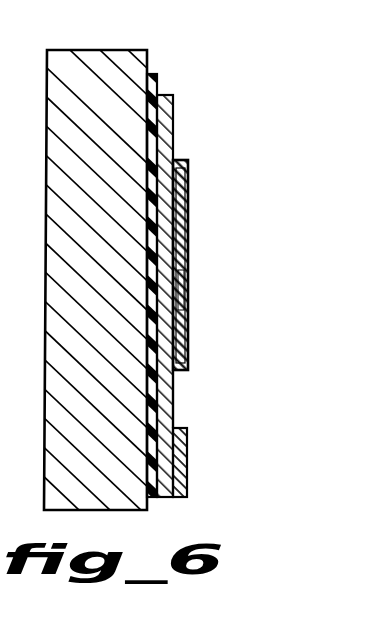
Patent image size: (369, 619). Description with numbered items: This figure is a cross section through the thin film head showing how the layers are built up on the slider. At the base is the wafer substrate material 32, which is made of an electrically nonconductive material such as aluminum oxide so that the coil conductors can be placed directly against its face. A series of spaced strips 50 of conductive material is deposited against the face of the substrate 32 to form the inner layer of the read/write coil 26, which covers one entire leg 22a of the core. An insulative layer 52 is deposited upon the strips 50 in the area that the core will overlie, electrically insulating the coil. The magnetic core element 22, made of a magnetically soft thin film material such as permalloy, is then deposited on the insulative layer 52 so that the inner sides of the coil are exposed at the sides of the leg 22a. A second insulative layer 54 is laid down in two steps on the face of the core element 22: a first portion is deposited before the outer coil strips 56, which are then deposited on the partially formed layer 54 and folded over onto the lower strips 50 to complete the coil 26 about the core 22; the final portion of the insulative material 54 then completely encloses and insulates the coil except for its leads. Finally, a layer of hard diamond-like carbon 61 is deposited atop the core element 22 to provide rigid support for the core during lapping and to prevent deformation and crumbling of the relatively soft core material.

The wafer substrate material 32 is at (92, 68).
The insulative layer 52 is at (159, 80).
The magnetic core element 22 is at (178, 107).
The leg of the core 22a is at (168, 395).
The second insulative layer 54 is at (189, 194).
The read/write coil 26 is at (188, 233).
The outer coil strips 56 is at (189, 285).
The spaced strips of conductive material 50 is at (146, 262).
The diamond-like carbon layer 61 is at (186, 463).